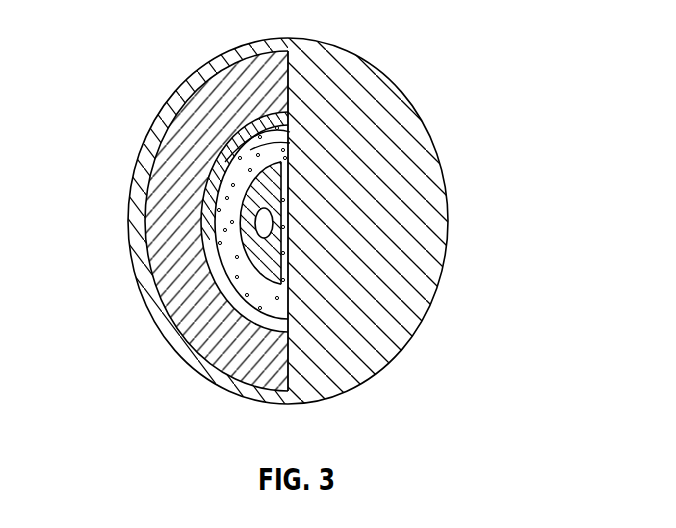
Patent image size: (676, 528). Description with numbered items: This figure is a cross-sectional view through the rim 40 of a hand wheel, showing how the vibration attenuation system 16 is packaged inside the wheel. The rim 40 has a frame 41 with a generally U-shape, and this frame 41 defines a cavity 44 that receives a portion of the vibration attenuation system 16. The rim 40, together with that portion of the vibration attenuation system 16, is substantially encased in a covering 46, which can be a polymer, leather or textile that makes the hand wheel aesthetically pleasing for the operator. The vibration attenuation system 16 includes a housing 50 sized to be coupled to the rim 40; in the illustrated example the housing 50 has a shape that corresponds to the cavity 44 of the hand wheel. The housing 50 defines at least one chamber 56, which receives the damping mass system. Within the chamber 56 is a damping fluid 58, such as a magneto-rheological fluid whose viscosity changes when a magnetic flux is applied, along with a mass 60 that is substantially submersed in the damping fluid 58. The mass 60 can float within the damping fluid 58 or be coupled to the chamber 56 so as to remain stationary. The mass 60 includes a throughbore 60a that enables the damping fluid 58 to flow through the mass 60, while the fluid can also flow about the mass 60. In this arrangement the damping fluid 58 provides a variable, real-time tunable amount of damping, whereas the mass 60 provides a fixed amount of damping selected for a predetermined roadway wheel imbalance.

The vibration attenuation system 16 is at (230, 320).
The rim 40 is at (381, 399).
The frame 41 is at (267, 380).
The cavity 44 is at (282, 118).
The covering 46 is at (418, 182).
The housing 50 is at (294, 293).
The chamber 56 is at (282, 148).
The damping fluid 58 is at (237, 167).
The mass 60 is at (284, 262).
The throughbore 60a is at (274, 222).